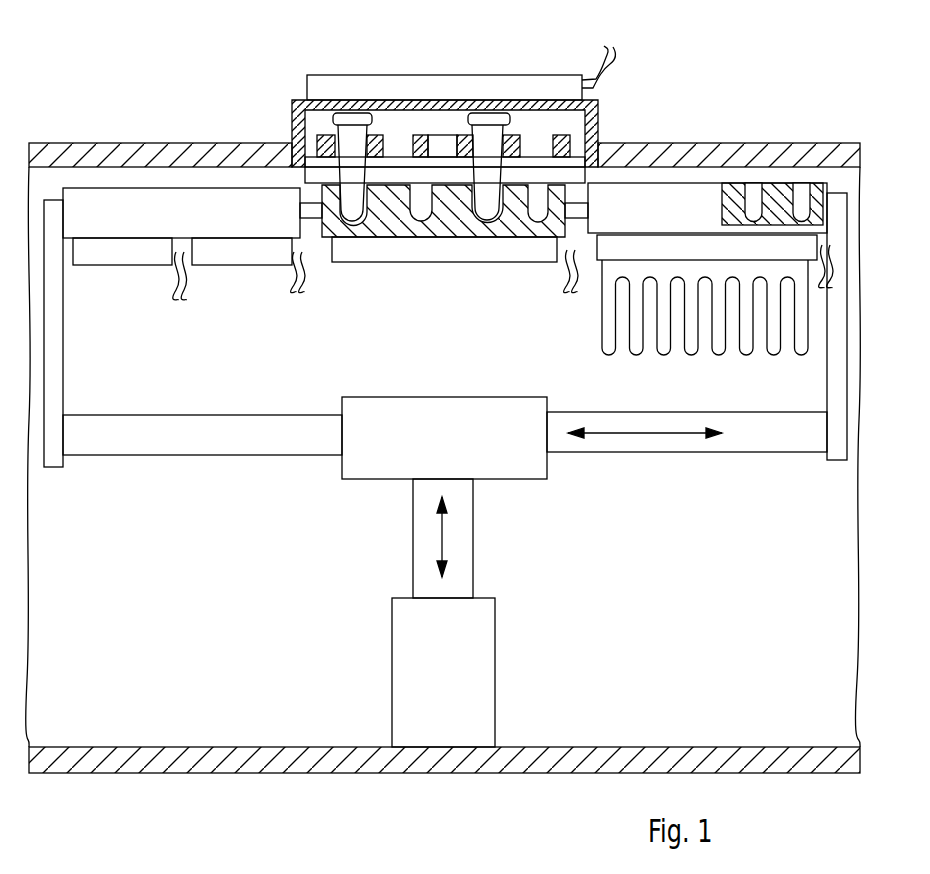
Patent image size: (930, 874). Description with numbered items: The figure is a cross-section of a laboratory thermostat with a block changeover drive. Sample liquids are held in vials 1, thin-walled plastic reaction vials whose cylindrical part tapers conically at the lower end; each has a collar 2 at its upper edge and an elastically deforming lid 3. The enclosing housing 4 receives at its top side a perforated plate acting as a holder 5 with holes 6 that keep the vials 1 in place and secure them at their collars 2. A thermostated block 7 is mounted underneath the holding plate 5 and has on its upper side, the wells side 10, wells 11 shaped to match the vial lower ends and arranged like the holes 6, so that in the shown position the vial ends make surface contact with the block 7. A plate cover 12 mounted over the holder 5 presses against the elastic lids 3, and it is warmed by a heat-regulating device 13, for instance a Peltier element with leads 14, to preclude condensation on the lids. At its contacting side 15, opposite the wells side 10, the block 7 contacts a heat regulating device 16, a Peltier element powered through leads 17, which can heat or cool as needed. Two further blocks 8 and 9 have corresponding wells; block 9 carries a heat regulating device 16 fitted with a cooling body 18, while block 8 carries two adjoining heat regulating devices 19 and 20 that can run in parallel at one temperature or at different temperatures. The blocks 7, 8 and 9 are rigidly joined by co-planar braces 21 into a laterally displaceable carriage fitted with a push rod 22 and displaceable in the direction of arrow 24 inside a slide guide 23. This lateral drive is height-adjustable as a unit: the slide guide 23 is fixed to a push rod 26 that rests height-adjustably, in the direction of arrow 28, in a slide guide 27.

The vial 1 is at (500, 173).
The collar 2 is at (310, 118).
The lid 3 is at (360, 118).
The housing 4 is at (823, 152).
The holder 5 is at (418, 132).
The holes 6 is at (452, 145).
The thermostated block 7 is at (455, 205).
The thermostated block 8 is at (157, 213).
The thermostated block 9 is at (707, 317).
The wells side 10 is at (565, 178).
The wells 11 is at (752, 205).
The plate cover 12 is at (600, 128).
The heat-regulating device 13 is at (487, 88).
The leads 14 is at (616, 68).
The contacting side 15 is at (357, 183).
The heat regulating device 16 is at (437, 248).
The leads 17 is at (568, 265).
The cooling body 18 is at (705, 329).
The heat regulating device 19 is at (107, 253).
The heat regulating device 20 is at (227, 253).
The braces 21 is at (310, 220).
The push rod 22 is at (122, 442).
The slide guide 23 is at (535, 463).
The arrow 24 is at (645, 437).
The push rod 26 is at (460, 572).
The slide guide 27 is at (482, 650).
The arrow 28 is at (432, 537).